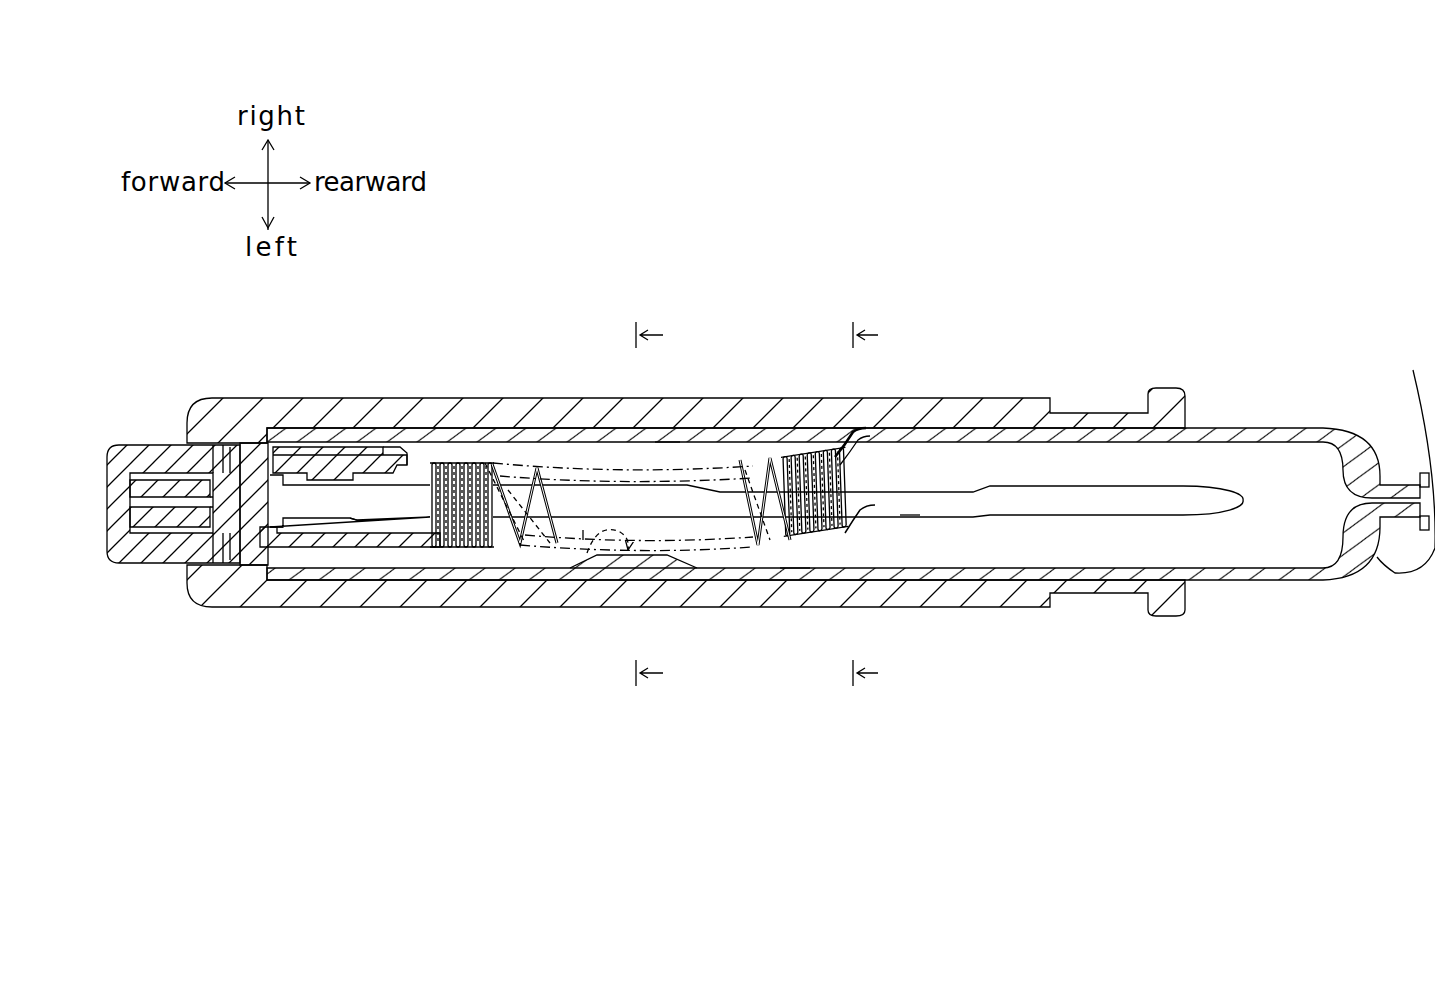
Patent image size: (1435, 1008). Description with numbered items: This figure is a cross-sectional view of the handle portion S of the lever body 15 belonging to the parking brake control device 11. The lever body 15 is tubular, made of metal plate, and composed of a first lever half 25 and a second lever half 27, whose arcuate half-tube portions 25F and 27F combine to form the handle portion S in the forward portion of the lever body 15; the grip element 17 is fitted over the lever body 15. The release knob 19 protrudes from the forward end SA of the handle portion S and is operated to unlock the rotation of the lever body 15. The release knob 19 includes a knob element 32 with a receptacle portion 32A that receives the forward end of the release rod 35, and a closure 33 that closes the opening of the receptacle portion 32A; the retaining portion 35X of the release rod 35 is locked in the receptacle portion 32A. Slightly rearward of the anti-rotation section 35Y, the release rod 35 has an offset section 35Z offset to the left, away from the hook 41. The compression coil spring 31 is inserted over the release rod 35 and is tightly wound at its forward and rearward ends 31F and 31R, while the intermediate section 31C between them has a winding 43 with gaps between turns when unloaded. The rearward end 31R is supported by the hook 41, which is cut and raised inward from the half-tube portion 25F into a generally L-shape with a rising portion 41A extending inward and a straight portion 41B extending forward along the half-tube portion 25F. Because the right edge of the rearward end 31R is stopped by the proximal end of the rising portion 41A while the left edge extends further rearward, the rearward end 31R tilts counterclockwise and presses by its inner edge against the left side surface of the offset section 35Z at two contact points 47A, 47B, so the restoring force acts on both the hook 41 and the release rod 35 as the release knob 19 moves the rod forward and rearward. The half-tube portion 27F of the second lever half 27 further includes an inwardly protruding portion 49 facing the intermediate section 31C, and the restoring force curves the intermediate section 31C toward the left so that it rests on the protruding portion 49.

The parking brake control device 11 is at (783, 245).
The lever body 15 is at (1424, 290).
The grip element 17 is at (229, 415).
The release knob 19 is at (135, 442).
The first lever half 25 is at (1320, 424).
The half-tube portion of the first lever half 25F is at (662, 442).
The second lever half 27 is at (1432, 415).
The half-tube portion of the second lever half 27F is at (797, 562).
The compression coil spring 31 is at (512, 550).
The intermediate section of the compression coil spring 31C is at (583, 540).
The forward end of the compression coil spring 31F is at (462, 550).
The rearward end of the compression coil spring 31R is at (835, 600).
The knob element 32 is at (305, 468).
The receptacle portion 32A is at (325, 495).
The closure 33 is at (333, 540).
The release rod 35 is at (1183, 495).
The retaining portion 35X is at (277, 527).
The anti-rotation section 35Y is at (372, 505).
The offset section 35Z is at (903, 507).
The hook 41 is at (1045, 290).
The rising portion 41A is at (850, 445).
The straight portion 41B is at (893, 458).
The winding 43 is at (543, 540).
The contact point 47A is at (862, 512).
The contact point 47B is at (860, 519).
The protruding portion 49 is at (655, 560).
The handle portion S is at (505, 352).
The forward end of the handle portion SA is at (168, 578).